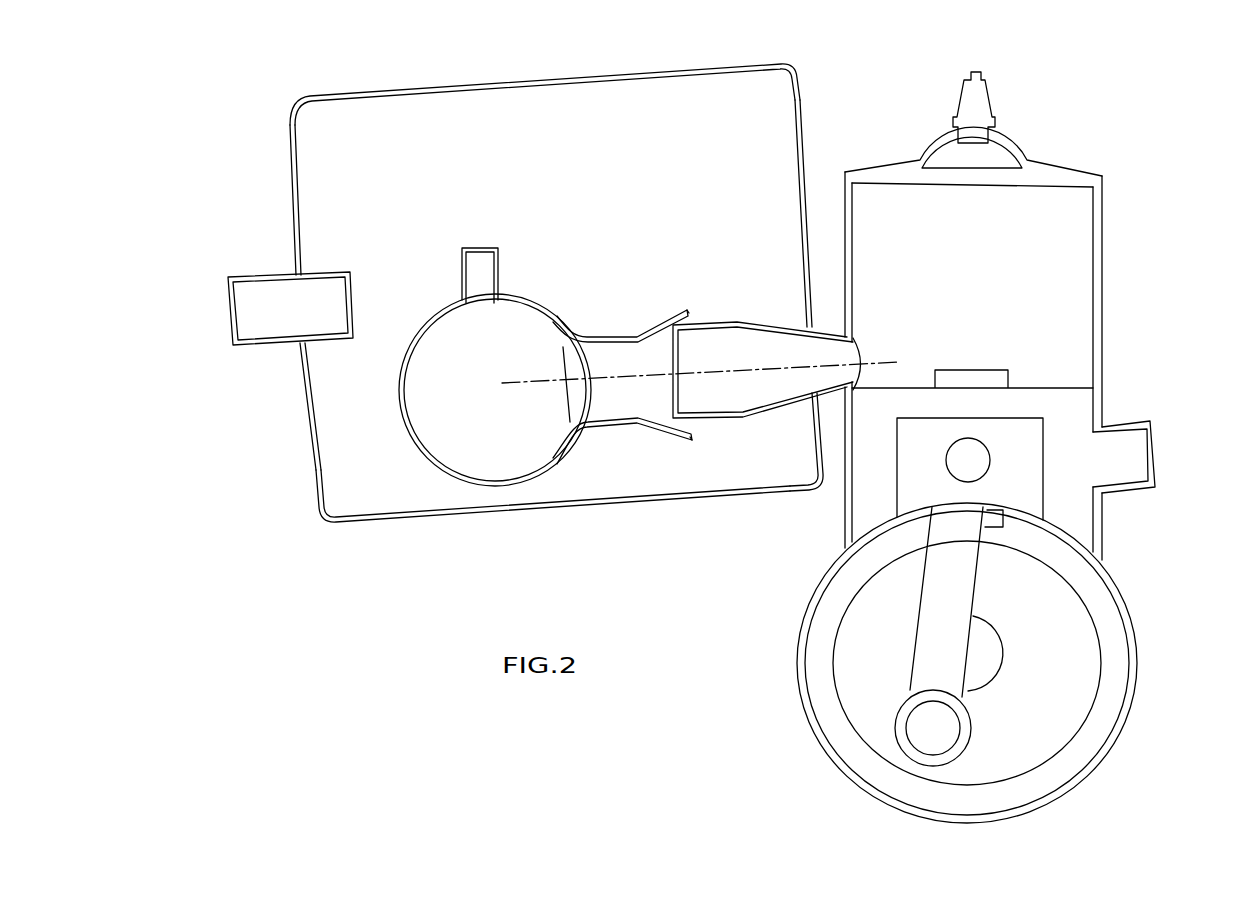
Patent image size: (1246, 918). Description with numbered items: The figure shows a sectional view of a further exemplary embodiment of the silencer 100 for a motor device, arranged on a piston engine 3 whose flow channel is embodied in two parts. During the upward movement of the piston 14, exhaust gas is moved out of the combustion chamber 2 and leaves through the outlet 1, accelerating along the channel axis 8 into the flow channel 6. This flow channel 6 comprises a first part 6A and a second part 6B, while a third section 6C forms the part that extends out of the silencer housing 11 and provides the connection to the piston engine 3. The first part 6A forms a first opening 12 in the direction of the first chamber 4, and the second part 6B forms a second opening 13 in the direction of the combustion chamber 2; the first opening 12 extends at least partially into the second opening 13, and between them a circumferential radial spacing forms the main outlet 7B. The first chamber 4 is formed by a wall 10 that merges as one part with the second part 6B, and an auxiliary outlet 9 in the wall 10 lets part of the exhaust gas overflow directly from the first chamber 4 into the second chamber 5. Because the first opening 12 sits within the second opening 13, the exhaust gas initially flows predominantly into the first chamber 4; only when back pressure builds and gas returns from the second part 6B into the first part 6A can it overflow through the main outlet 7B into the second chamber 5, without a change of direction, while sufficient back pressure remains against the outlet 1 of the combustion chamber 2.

The silencer 100 is at (262, 92).
The outlet 1 is at (851, 353).
The combustion chamber 2 is at (1047, 267).
The piston engine 3 is at (1004, 447).
The first chamber 4 is at (503, 367).
The second chamber 5 is at (556, 180).
The flow channel 6 is at (762, 242).
The first part of the flow channel 6A is at (735, 322).
The second part of the flow channel 6B is at (615, 332).
The third section of the flow channel 6C is at (830, 323).
The main outlet 7B is at (700, 431).
The channel axis 8 is at (678, 397).
The auxiliary outlet 9 is at (462, 268).
The wall 10 is at (405, 423).
The silencer housing 11 is at (290, 188).
The first opening 12 is at (670, 330).
The second opening 13 is at (693, 307).
The piston 14 is at (1077, 420).